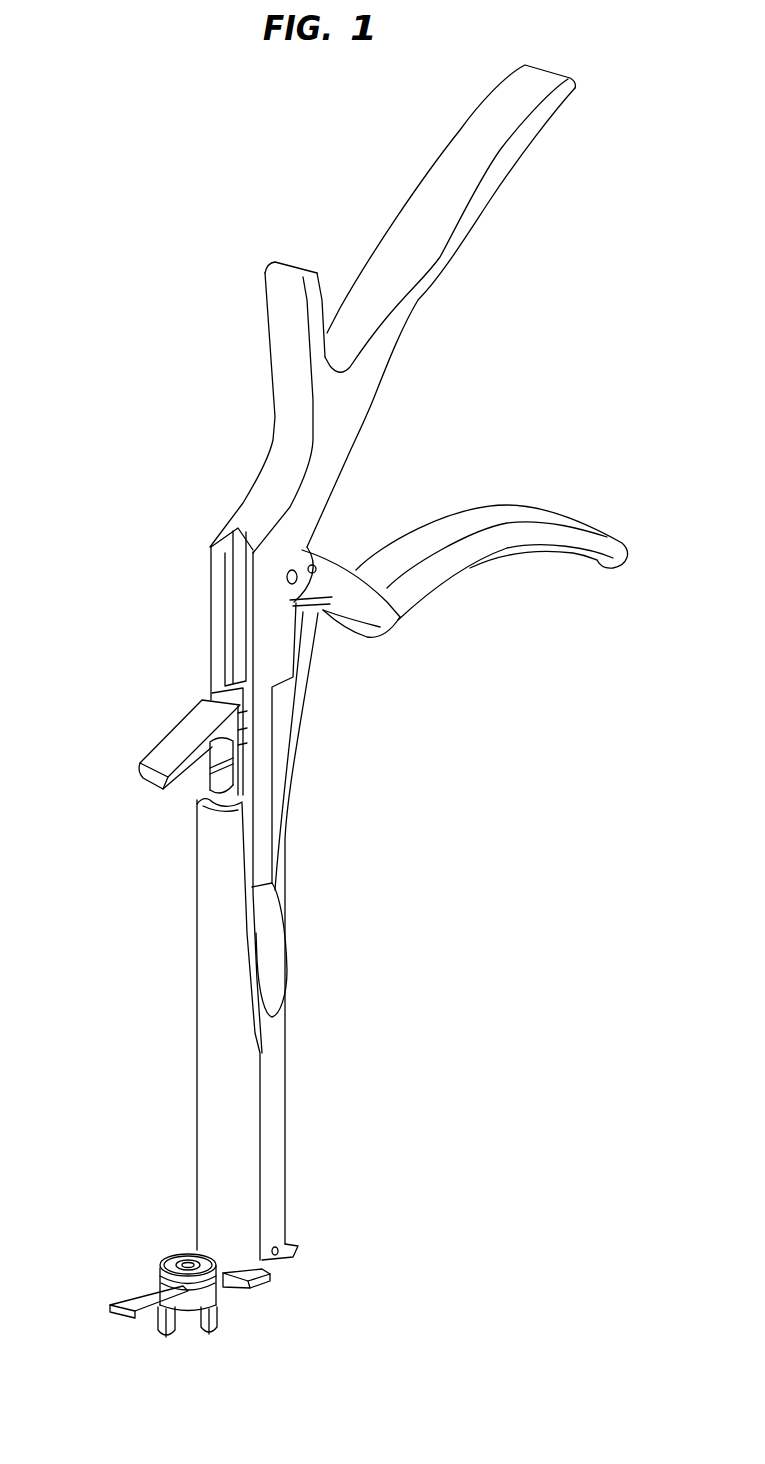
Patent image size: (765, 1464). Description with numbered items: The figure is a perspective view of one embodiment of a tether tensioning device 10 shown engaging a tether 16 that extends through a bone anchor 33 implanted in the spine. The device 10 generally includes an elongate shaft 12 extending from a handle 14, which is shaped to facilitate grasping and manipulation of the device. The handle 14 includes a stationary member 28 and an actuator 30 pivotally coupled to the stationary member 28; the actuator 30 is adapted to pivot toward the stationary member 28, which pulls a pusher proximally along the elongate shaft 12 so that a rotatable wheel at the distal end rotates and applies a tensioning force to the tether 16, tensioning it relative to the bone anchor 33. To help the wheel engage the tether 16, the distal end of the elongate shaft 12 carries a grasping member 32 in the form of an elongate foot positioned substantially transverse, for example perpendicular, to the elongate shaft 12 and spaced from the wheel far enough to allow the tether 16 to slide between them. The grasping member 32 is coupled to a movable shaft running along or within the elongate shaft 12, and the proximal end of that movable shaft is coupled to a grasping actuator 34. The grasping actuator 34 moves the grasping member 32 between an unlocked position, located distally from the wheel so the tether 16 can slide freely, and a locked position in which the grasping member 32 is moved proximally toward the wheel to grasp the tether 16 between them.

The tether tensioning device 10 is at (142, 180).
The elongate shaft 12 is at (180, 1004).
The handle 14 is at (543, 340).
The tether 16 is at (133, 1302).
The stationary member 28 is at (396, 224).
The actuator 30 is at (469, 570).
The grasping member 32 is at (265, 1286).
The bone anchor 33 is at (216, 1322).
The grasping actuator 34 is at (172, 732).